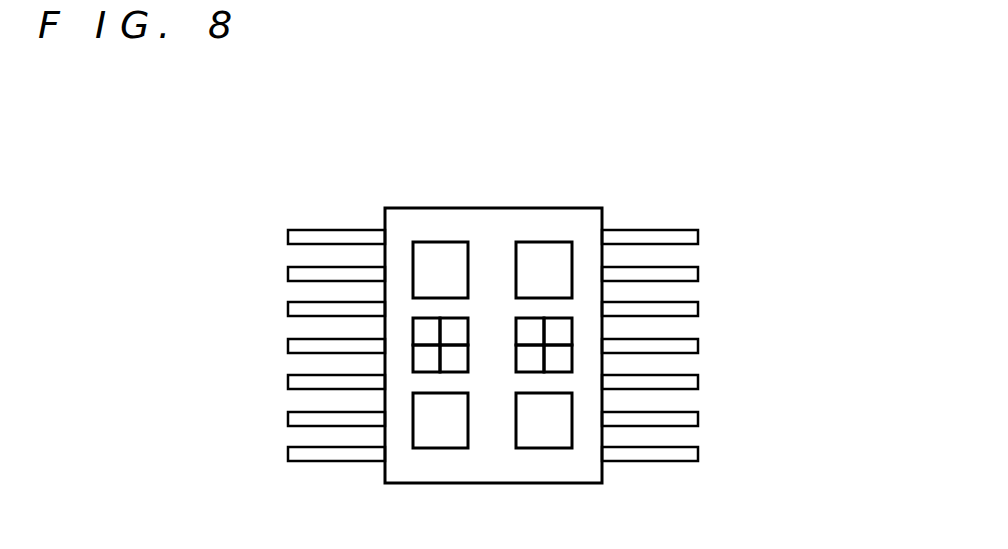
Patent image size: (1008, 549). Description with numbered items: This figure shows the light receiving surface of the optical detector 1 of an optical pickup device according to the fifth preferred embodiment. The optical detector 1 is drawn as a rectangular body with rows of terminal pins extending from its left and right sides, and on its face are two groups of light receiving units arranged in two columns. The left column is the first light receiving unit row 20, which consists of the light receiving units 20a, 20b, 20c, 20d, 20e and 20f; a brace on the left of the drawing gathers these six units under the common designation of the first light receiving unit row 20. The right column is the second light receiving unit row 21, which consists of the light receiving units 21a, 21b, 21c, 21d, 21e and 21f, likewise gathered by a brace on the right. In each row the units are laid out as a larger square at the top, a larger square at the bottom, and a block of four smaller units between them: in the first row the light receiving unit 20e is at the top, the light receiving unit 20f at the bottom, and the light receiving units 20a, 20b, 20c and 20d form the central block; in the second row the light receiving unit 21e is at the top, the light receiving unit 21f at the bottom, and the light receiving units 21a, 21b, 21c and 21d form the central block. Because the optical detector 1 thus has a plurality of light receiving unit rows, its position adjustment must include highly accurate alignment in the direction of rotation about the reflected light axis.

The optical detector 1 is at (495, 225).
The first light receiving unit row 20 is at (175, 223).
The light receiving unit 20a is at (460, 328).
The light receiving unit 20b is at (460, 363).
The light receiving unit 20c is at (432, 354).
The light receiving unit 20d is at (432, 337).
The light receiving unit 20e is at (430, 252).
The light receiving unit 20f is at (430, 437).
The second light receiving unit row 21 is at (812, 223).
The light receiving unit 21a is at (555, 337).
The light receiving unit 21b is at (527, 328).
The light receiving unit 21c is at (527, 363).
The light receiving unit 21d is at (555, 354).
The light receiving unit 21e is at (557, 252).
The light receiving unit 21f is at (557, 437).